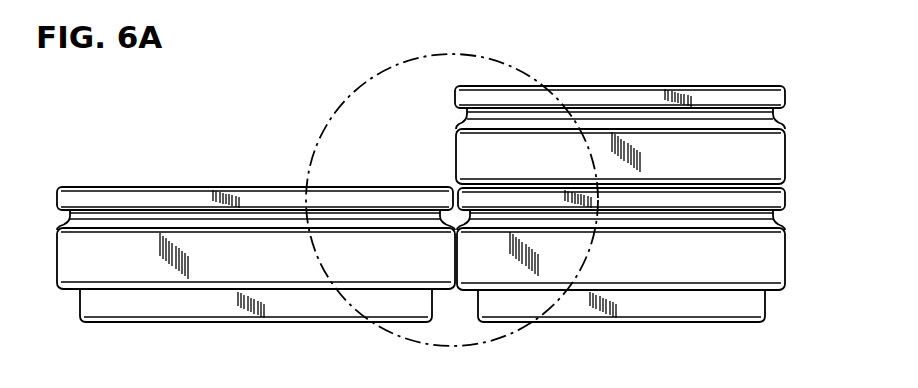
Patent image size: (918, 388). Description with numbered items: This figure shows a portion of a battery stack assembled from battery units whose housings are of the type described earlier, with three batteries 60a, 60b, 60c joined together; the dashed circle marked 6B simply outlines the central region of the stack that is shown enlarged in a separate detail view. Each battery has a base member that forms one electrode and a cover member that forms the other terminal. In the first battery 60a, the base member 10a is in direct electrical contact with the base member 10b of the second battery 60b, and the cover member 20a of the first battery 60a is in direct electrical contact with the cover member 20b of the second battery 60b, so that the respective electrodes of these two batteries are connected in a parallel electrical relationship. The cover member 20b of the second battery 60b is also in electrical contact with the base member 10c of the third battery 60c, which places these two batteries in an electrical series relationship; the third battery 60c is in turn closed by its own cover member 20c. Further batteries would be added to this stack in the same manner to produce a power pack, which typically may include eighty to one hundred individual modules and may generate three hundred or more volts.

The detail view circle for FIG. 6B is at (312, 166).
The base member of the first battery 10a is at (65, 267).
The cover member of the first battery 20a is at (148, 198).
The first battery 60a is at (233, 235).
The base member of the second battery 10b is at (786, 286).
The cover member of the second battery 20b is at (735, 203).
The second battery 60b is at (652, 262).
The base member of the third battery 10c is at (777, 162).
The cover member of the third battery 20c is at (628, 98).
The third battery 60c is at (650, 116).